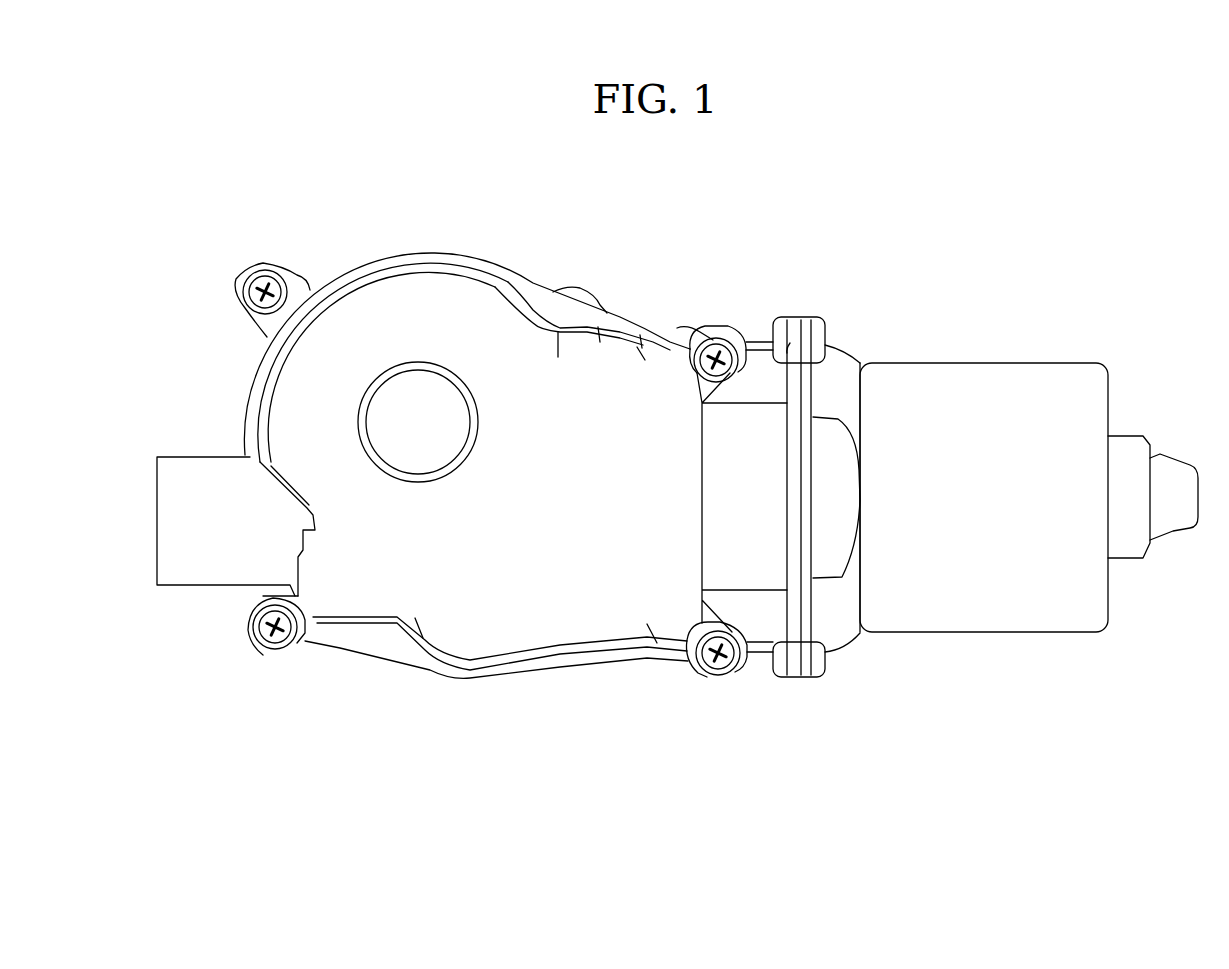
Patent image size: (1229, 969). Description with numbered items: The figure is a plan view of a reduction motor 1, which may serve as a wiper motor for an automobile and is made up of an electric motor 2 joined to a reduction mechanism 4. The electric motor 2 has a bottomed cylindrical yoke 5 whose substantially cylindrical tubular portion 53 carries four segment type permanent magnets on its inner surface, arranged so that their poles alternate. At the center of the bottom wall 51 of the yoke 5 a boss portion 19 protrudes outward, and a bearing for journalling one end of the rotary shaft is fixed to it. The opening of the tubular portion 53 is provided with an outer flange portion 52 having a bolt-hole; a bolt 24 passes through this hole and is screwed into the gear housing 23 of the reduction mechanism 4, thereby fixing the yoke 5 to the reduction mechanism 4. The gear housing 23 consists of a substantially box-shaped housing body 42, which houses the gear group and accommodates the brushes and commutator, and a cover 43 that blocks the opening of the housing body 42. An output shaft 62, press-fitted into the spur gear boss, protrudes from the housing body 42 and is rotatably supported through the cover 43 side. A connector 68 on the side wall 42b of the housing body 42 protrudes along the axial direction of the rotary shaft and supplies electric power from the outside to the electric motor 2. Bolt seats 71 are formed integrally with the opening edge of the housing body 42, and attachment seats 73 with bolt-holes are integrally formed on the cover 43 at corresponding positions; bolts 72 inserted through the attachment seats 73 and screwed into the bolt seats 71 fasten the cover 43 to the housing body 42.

The reduction motor 1 is at (861, 222).
The electric motor 2 is at (996, 327).
The reduction mechanism 4 is at (481, 254).
The yoke 5 is at (1059, 362).
The boss portion 19 is at (1160, 457).
The gear housing 23 is at (535, 283).
The bolt 24 is at (818, 330).
The housing body 42 is at (433, 673).
The side wall 42b is at (622, 660).
The cover 43 is at (388, 297).
The bottom wall 51 is at (1109, 596).
The outer flange portion 52 is at (805, 680).
The tubular portion 53 is at (968, 633).
The output shaft 62 is at (360, 417).
The connector 68 is at (190, 587).
The bolt seats 71 is at (233, 278).
The bolts 72 is at (262, 277).
The attachment seats 73 is at (290, 272).